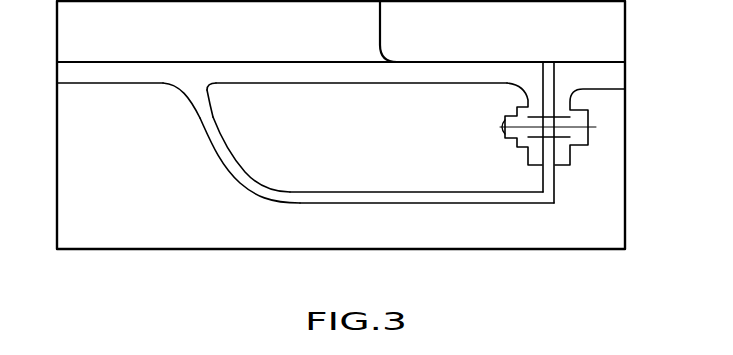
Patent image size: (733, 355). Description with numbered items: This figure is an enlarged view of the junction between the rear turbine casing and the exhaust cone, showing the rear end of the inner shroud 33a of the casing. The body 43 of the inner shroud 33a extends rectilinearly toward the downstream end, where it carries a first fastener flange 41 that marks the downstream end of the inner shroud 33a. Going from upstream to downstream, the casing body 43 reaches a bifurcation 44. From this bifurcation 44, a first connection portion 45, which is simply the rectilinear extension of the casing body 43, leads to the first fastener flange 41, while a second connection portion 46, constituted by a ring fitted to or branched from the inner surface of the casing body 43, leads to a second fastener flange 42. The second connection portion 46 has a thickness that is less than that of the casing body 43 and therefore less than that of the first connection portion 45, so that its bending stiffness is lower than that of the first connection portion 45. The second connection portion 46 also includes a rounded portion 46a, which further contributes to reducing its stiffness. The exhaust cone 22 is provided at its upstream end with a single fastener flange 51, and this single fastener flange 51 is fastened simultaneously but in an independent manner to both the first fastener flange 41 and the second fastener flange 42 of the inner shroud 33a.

The exhaust cone 22 is at (612, 54).
The inner shroud 33a is at (184, 61).
The first fastener flange 41 is at (527, 160).
The second fastener flange 42 is at (550, 178).
The body of the inner shroud 43 is at (92, 75).
The bifurcation 44 is at (177, 95).
The first connection portion 45 is at (403, 73).
The second connection portion 46 is at (410, 198).
The rounded portion 46a is at (250, 183).
The single fastener flange 51 is at (573, 160).